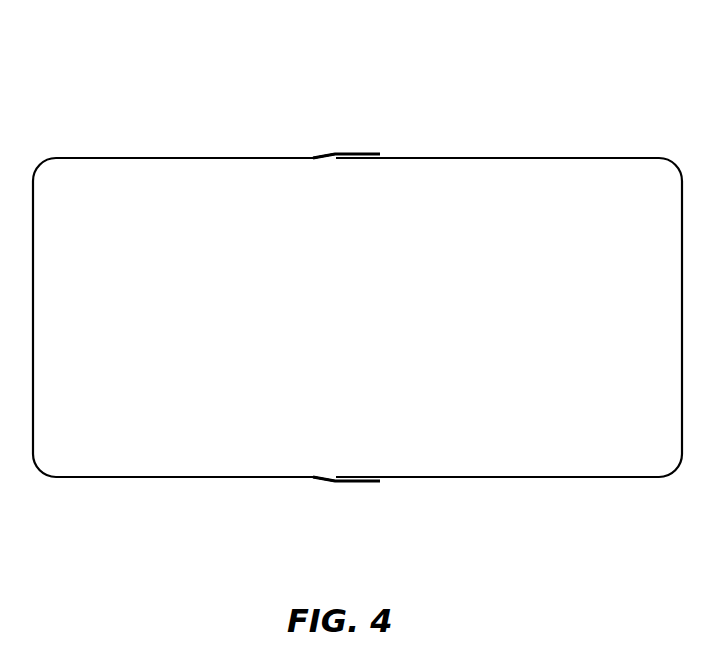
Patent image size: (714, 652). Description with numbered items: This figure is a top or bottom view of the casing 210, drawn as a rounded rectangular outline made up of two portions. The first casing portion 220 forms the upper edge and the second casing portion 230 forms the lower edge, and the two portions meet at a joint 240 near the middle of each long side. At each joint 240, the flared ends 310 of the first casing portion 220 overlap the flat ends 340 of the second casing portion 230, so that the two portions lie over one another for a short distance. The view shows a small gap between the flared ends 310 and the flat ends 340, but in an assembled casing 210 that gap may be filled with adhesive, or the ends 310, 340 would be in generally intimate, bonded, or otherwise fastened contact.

The casing 210 is at (580, 104).
The first casing portion 220 is at (227, 157).
The second casing portion 230 is at (526, 478).
The joint 240 is at (380, 102).
The flared ends 310 is at (350, 152).
The flat ends 340 is at (353, 159).